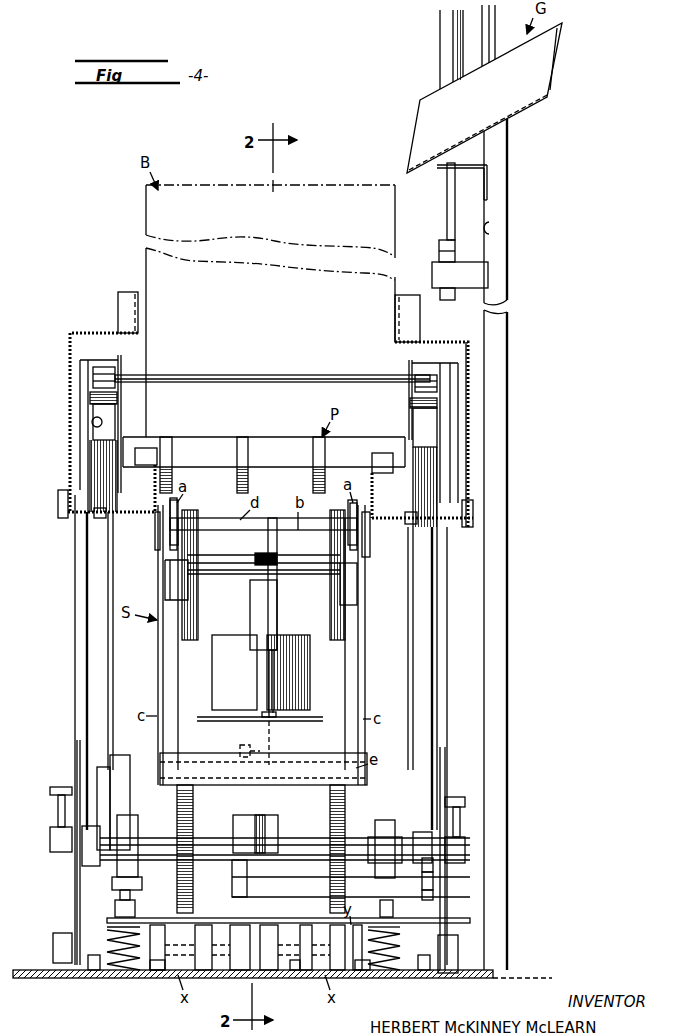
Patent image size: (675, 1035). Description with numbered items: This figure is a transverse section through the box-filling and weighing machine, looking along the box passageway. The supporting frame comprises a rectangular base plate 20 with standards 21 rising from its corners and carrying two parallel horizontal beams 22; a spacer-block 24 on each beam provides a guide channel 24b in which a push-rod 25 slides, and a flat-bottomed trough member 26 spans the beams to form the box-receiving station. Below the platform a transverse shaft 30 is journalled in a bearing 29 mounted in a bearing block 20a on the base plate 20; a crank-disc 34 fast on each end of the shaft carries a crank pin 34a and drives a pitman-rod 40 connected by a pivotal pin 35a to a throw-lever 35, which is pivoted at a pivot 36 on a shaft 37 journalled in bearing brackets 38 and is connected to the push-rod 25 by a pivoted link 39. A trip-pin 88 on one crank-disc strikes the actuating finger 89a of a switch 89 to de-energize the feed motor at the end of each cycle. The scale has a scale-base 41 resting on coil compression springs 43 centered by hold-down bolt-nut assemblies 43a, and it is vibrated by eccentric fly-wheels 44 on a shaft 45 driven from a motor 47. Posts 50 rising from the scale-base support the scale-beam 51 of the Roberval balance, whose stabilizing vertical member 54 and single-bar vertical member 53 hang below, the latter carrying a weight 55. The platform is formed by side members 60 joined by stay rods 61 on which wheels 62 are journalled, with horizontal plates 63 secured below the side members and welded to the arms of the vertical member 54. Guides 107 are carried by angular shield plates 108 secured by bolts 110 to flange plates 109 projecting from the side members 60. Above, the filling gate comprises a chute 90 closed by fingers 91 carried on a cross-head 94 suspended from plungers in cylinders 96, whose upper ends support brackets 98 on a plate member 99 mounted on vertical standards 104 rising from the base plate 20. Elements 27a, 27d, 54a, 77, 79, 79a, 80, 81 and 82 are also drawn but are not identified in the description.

The base plate 20 is at (30, 972).
The bearing block 20a is at (155, 972).
The standards 21 is at (105, 718).
The horizontal beams 22 is at (97, 425).
The spacer-block 24 is at (97, 398).
The guide channel 24b is at (122, 358).
The push-rod 25 is at (105, 366).
The trough member 26 is at (150, 437).
The shaft 27a is at (250, 375).
The shaft 27d is at (297, 375).
The bearing 29 is at (136, 825).
The shaft 30 is at (300, 845).
The crank-disc 34 is at (76, 772).
The crank pin 34a is at (66, 845).
The throw-lever 35 is at (76, 665).
The pivotal pin 35a is at (50, 791).
The pivot 36 is at (64, 934).
The shaft 37 is at (297, 980).
The bearing brackets 38 is at (95, 972).
The pivoted link 39 is at (78, 470).
The pitman-rod 40 is at (57, 823).
The scale-base 41 is at (302, 912).
The coil compression springs 43 is at (116, 972).
The hold-down bolt-nut assembly 43a is at (120, 893).
The eccentric fly-wheels 44 is at (114, 905).
The shaft 45 is at (312, 892).
The motor 47 is at (118, 757).
The post 50 is at (178, 652).
The scale-beam 51 is at (182, 504).
The vertical member 53 is at (263, 752).
The vertical member 54 is at (160, 663).
The plate 54a is at (277, 774).
The weight 55 is at (311, 680).
The side members 60 is at (155, 492).
The stay rods 61 is at (188, 475).
The wheels 62 is at (250, 459).
The horizontal plate 63 is at (156, 545).
The block 77 is at (272, 822).
The bar 79 is at (258, 553).
The bar 79a is at (293, 575).
The bracket 80 is at (188, 585).
The pin 81 is at (244, 745).
The block 82 is at (250, 618).
The trip-pin 88 is at (420, 832).
The switch 89 is at (434, 885).
The actuating finger 89a is at (434, 868).
The chute 90 is at (550, 88).
The fingers 91 is at (455, 215).
The cross-head 94 is at (487, 162).
The cylinder 96 is at (445, 44).
The brackets 98 is at (486, 30).
The plate member 99 is at (492, 229).
The vertical standards 104 is at (500, 580).
The guides 107 is at (140, 305).
The angular shield plates 108 is at (470, 475).
The flange plate 109 is at (70, 385).
The bolts 110 is at (98, 516).